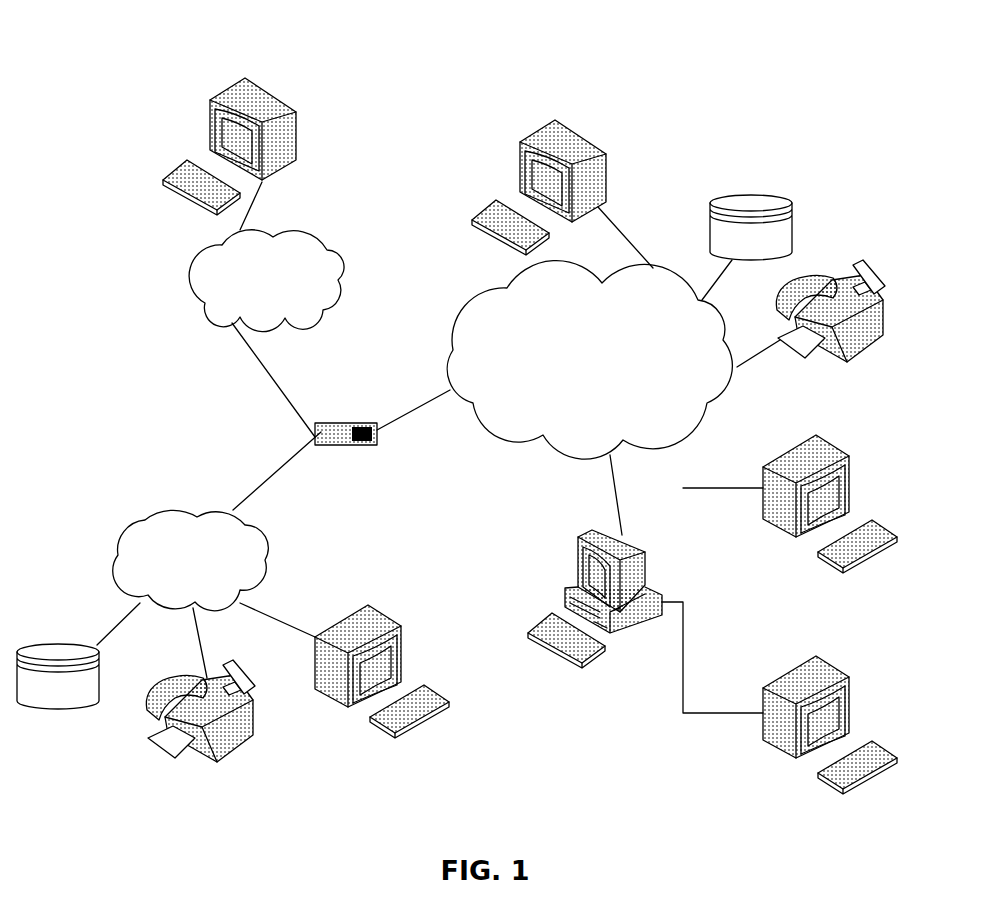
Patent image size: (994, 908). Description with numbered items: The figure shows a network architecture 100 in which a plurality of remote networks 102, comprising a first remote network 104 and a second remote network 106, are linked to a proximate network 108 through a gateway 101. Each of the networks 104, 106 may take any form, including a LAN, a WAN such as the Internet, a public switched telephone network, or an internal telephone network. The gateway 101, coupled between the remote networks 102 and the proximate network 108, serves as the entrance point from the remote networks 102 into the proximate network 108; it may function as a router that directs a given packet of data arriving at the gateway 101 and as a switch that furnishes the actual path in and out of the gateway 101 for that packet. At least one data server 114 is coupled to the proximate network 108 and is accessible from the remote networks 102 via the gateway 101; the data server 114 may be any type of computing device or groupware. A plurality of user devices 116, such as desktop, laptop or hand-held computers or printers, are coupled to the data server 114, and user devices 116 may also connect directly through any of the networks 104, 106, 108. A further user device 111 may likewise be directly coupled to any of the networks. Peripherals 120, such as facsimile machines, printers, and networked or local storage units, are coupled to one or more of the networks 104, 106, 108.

The architecture 100 is at (142, 62).
The gateway 101 is at (330, 423).
The remote networks 102 is at (168, 345).
The first remote network 104 is at (118, 533).
The second remote network 106 is at (337, 252).
The proximate network 108 is at (698, 425).
The user device 111 is at (605, 160).
The data server 114 is at (578, 554).
The user devices 116 is at (297, 120).
The peripheral 120 is at (792, 203).